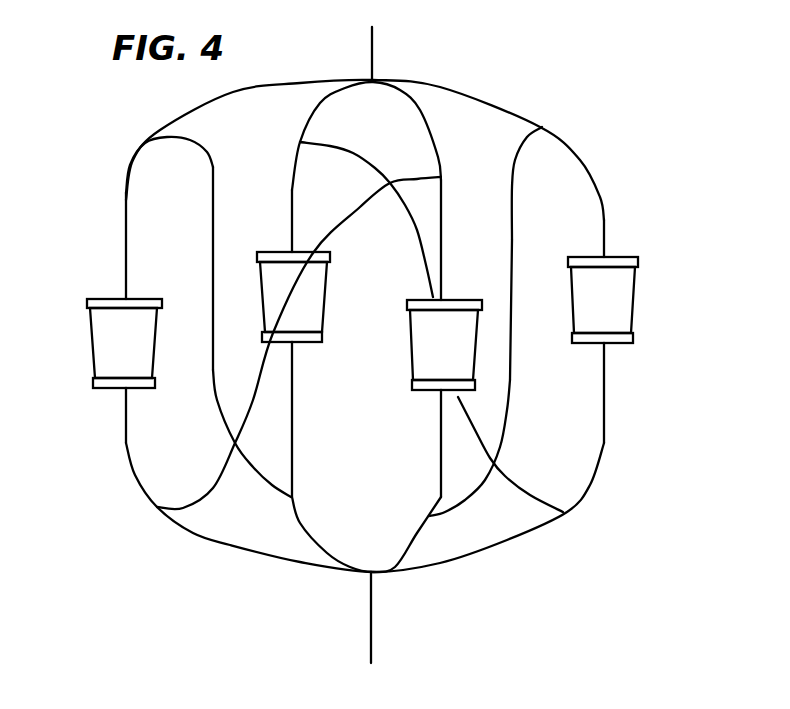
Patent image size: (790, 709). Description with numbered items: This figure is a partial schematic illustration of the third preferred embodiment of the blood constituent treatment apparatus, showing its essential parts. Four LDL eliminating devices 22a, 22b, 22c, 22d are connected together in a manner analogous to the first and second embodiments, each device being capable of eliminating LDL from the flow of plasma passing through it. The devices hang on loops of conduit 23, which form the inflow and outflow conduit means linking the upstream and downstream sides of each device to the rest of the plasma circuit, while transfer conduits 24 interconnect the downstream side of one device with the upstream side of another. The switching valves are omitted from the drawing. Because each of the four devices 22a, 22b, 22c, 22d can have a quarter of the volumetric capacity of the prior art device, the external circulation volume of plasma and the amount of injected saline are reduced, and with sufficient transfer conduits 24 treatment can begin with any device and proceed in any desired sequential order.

The conduit 23 is at (125, 210).
The transfer conduit 24 is at (212, 208).
The LDL eliminating device 22a is at (92, 350).
The LDL eliminating device 22b is at (259, 290).
The LDL eliminating device 22c is at (410, 350).
The LDL eliminating device 22d is at (637, 310).